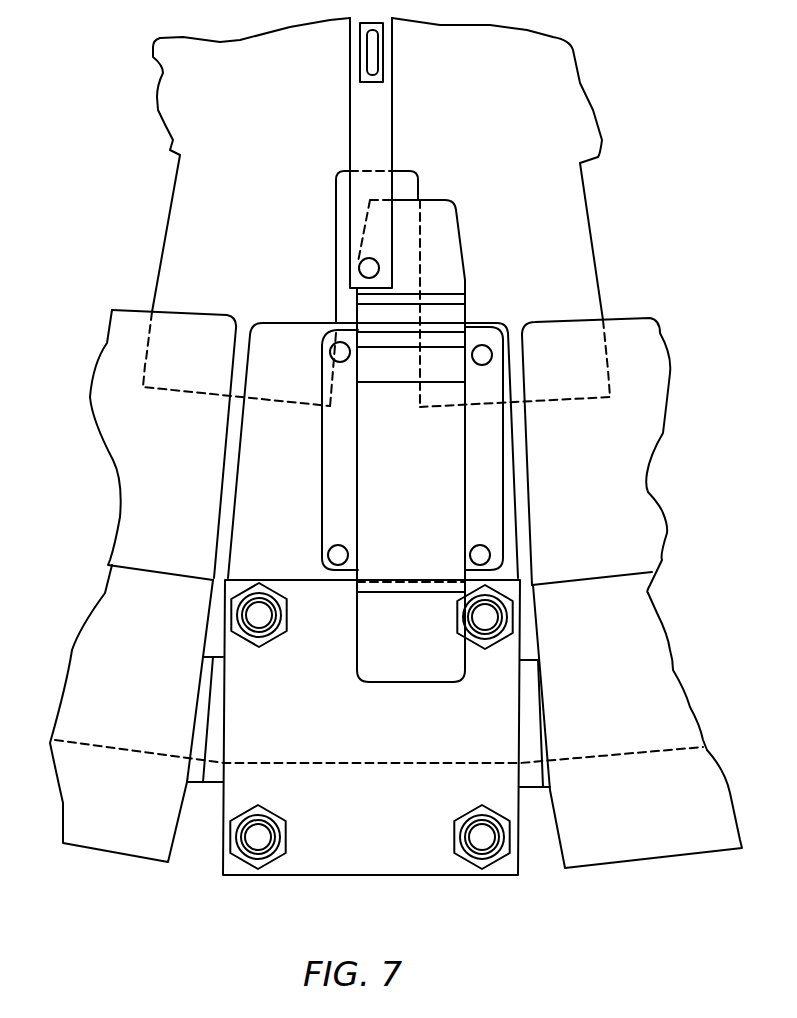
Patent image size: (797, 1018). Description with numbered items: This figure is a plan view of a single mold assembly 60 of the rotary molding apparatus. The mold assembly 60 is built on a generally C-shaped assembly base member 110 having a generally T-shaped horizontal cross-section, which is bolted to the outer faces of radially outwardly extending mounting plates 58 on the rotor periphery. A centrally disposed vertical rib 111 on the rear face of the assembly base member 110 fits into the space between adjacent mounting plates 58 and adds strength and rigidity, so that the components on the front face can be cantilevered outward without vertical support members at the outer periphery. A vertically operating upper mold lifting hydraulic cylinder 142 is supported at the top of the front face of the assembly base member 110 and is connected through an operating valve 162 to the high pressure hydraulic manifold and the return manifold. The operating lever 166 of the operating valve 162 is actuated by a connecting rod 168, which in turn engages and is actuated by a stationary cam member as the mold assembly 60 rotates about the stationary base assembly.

The mounting plates 58 is at (268, 229).
The mold assembly 60 is at (371, 757).
The assembly base member 110 is at (284, 468).
The vertical rib 111 is at (403, 188).
The upper mold lifting hydraulic cylinder 142 is at (341, 722).
The operating valve 162 is at (429, 448).
The operating lever 166 is at (377, 113).
The connecting rod 168 is at (372, 50).